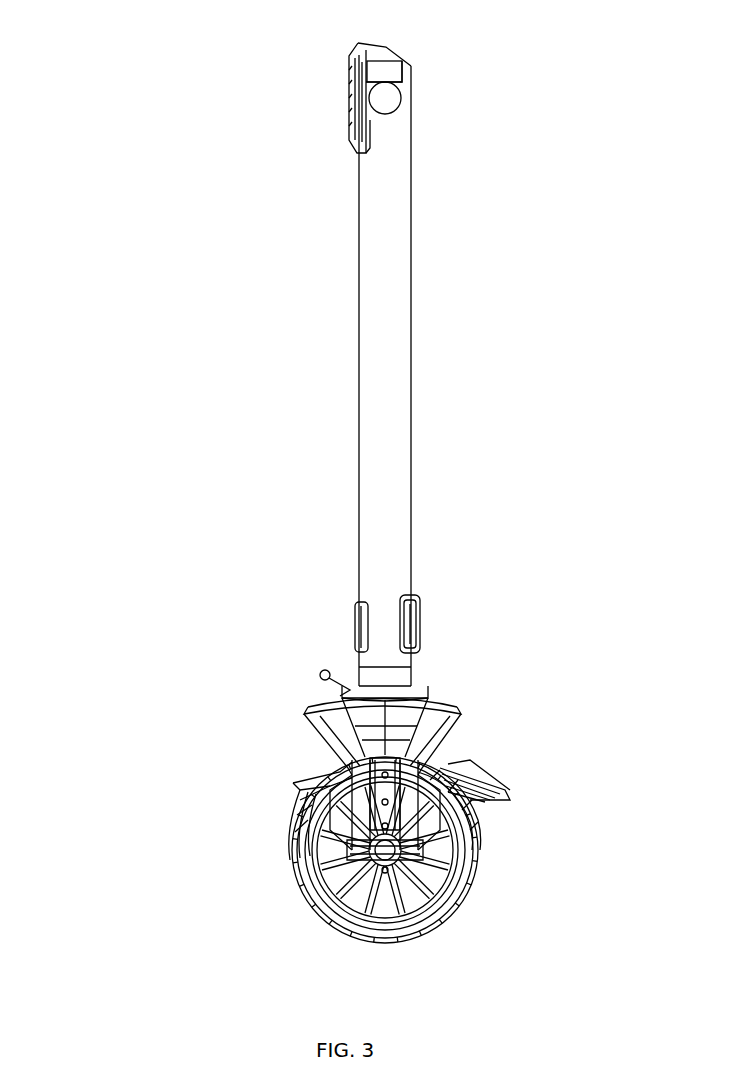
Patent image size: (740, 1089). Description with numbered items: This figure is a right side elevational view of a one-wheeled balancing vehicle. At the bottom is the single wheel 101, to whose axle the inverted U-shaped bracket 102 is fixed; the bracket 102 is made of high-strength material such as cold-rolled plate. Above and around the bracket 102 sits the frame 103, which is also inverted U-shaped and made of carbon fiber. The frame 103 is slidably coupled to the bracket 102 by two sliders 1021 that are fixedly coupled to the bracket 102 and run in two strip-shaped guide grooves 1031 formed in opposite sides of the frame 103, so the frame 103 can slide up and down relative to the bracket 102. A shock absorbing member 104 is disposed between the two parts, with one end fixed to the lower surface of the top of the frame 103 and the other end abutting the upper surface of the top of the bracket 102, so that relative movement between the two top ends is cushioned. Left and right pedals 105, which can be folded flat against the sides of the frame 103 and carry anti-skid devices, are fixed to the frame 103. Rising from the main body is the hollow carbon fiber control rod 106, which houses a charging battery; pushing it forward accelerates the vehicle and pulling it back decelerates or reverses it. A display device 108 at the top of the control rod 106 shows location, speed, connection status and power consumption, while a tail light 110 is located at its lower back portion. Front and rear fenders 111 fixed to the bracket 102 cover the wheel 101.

The wheel 101 is at (252, 853).
The bracket 102 is at (504, 751).
The sliders 1021 is at (501, 880).
The frame 103 is at (244, 702).
The guide grooves 1031 is at (542, 834).
The shock absorbing member 104 is at (227, 627).
The pedals 105 is at (189, 797).
The control rod 106 is at (219, 370).
The display device 108 is at (507, 88).
The tail light 110 is at (508, 536).
The fenders 111 is at (551, 781).